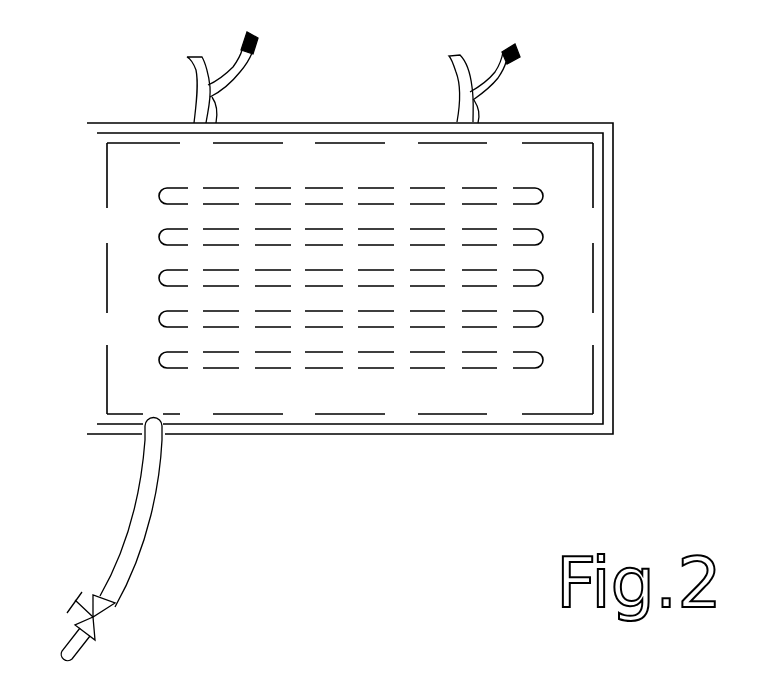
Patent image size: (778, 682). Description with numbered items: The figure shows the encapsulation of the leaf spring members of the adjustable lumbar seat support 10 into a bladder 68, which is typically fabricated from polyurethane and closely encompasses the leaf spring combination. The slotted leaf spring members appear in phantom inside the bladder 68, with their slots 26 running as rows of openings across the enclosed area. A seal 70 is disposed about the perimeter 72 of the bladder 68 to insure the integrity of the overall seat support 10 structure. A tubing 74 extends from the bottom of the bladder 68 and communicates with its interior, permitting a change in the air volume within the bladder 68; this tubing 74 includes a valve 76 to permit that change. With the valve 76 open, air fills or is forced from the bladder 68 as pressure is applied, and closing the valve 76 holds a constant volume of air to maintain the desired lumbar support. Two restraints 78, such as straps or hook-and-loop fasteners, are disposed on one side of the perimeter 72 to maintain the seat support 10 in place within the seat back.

The adjustable lumbar seat support 10 is at (602, 264).
The slots 26 is at (540, 188).
The bladder 68 is at (380, 181).
The seal 70 is at (608, 360).
The perimeter 72 is at (622, 302).
The tubing 74 is at (147, 526).
The valve 76 is at (100, 615).
The restraints 78 is at (218, 93).